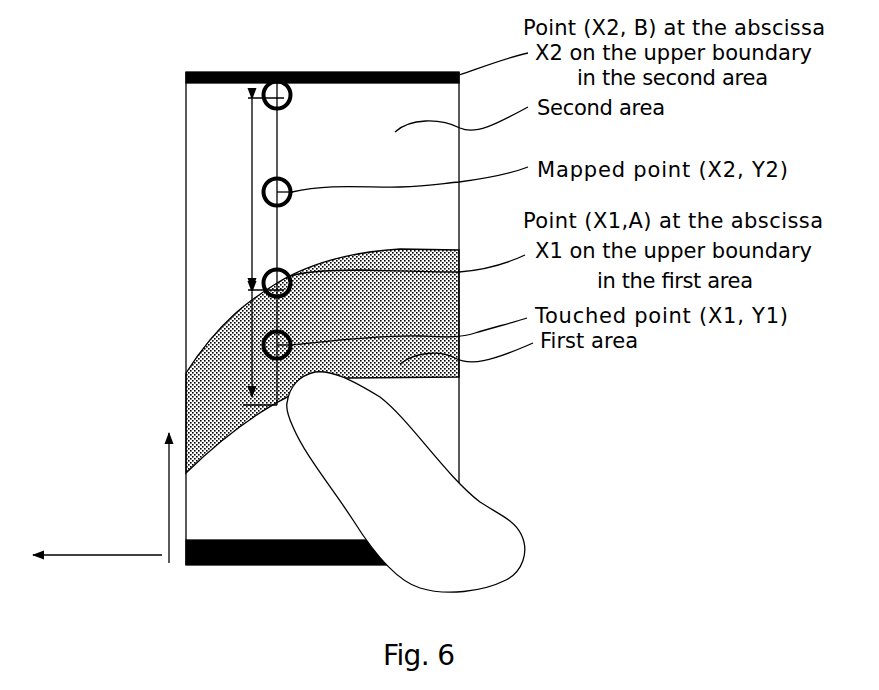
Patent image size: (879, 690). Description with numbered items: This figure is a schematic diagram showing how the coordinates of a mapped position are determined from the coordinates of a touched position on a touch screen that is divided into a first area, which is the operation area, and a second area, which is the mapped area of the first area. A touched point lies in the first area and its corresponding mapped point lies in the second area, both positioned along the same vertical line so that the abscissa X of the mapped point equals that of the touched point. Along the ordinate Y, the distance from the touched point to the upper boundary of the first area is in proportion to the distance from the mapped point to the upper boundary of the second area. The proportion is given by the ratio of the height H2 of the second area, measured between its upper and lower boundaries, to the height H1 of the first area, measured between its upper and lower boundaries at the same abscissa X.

The distance between upper and lower boundary points of the first area H1 is at (247, 348).
The distance between upper and lower boundary points of the second area H2 is at (250, 194).
The abscissa X is at (97, 536).
The ordinate Y is at (152, 498).